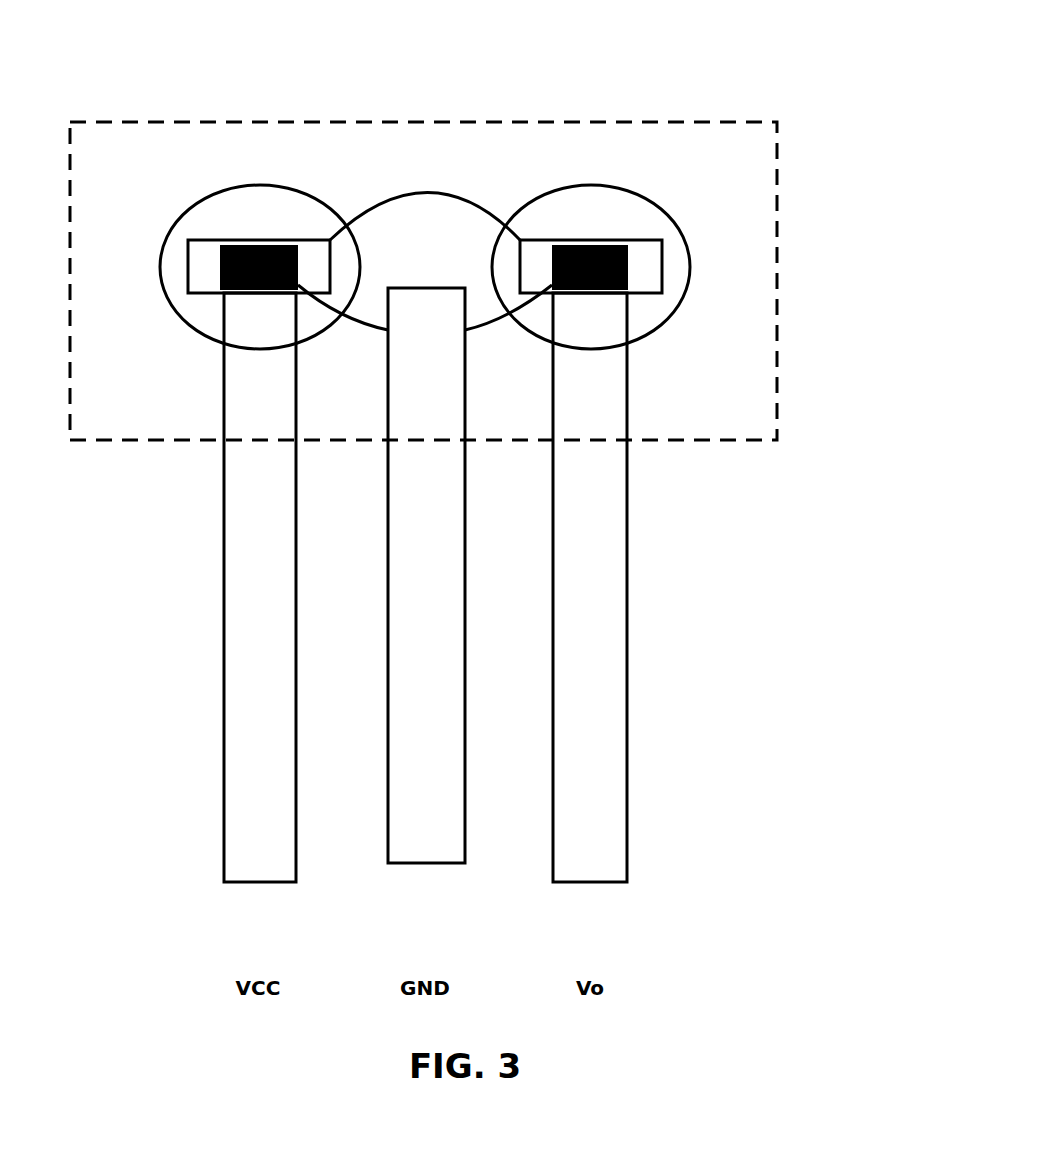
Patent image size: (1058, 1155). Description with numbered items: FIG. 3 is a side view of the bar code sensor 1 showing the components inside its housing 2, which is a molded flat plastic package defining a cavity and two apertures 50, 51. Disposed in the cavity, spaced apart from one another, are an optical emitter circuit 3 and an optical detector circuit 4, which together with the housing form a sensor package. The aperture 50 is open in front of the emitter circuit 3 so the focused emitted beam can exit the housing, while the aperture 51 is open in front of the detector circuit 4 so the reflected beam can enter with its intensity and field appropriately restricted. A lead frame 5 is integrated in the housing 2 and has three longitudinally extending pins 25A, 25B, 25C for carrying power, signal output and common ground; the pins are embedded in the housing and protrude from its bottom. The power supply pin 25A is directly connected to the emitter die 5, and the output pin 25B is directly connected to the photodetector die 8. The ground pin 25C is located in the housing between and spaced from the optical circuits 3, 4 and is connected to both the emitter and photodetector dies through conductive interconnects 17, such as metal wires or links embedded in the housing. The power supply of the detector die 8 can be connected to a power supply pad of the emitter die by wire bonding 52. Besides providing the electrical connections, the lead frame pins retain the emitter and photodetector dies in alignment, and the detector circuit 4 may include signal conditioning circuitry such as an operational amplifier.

The bar code sensor 1 is at (503, 228).
The housing 2 is at (779, 230).
The optical emitter circuit 3 is at (212, 304).
The optical detector circuit 4 is at (639, 305).
The emitter die 5 is at (253, 246).
The photodetector die 8 is at (598, 246).
The conductive interconnects 17 is at (343, 318).
The aperture 50 is at (178, 215).
The aperture 51 is at (664, 209).
The wire bonding 52 is at (438, 192).
The power supply pin 25A is at (260, 612).
The output pin 25B is at (426, 610).
The ground pin 25C is at (590, 612).